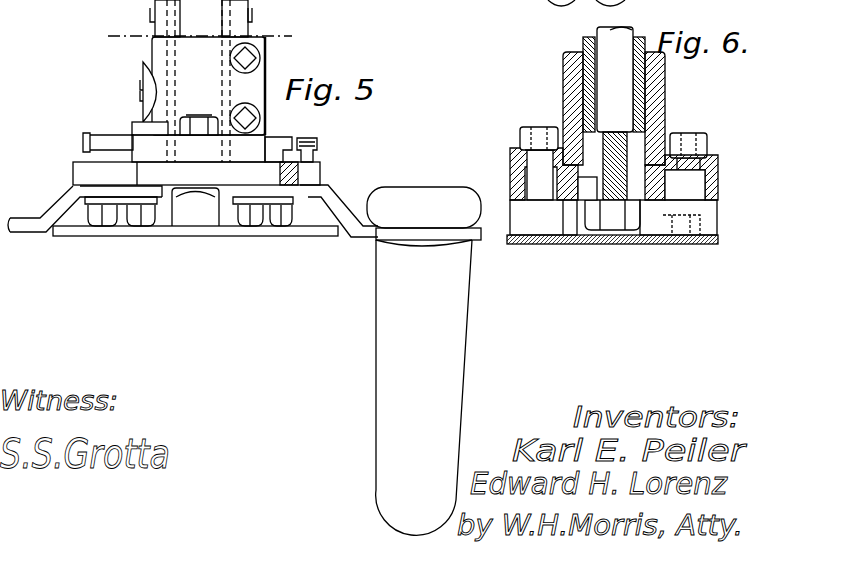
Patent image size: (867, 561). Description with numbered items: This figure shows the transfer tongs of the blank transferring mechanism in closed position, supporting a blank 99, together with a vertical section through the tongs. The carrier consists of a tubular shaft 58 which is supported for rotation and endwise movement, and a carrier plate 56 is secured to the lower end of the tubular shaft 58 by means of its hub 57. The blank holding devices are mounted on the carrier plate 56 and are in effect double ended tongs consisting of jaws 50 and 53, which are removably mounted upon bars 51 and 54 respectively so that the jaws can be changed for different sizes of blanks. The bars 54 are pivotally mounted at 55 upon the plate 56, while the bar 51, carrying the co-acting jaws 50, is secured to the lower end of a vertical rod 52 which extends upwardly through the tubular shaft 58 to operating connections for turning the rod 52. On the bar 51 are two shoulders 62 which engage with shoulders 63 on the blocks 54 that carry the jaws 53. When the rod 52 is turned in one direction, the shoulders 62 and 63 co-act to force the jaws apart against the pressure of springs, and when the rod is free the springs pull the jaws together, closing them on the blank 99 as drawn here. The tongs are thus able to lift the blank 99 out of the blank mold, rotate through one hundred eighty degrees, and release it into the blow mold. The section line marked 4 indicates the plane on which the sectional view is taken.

In FIG. 5, the section line 4- 4 is at (204, 36).
In FIG. 5, the jaws 50 is at (22, 216).
In FIG. 6, the jaws 50 is at (592, 231).
In FIG. 5, the bar 51 is at (74, 165).
In FIG. 6, the bar 51 is at (580, 206).
In FIG. 6, the vertical rod 52 is at (624, 103).
In FIG. 5, the jaws 53 is at (333, 197).
In FIG. 6, the jaws 53 is at (661, 233).
In FIG. 5, the bars 54 is at (318, 169).
In FIG. 6, the bars 54 is at (517, 179).
In FIG. 5, the pivot 55 is at (198, 117).
In FIG. 6, the pivot 55 is at (692, 141).
In FIG. 5, the carrier plate 56 is at (256, 147).
In FIG. 6, the carrier plate 56 is at (516, 155).
In FIG. 5, the hub 57 is at (262, 76).
In FIG. 6, the hub 57 is at (565, 90).
In FIG. 5, the tubular shaft 58 is at (180, 50).
In FIG. 6, the tubular shaft 58 is at (585, 44).
In FIG. 6, the shoulders 62 is at (574, 189).
In FIG. 6, the shoulders 63 is at (652, 191).
In FIG. 5, the blank 99 is at (463, 318).